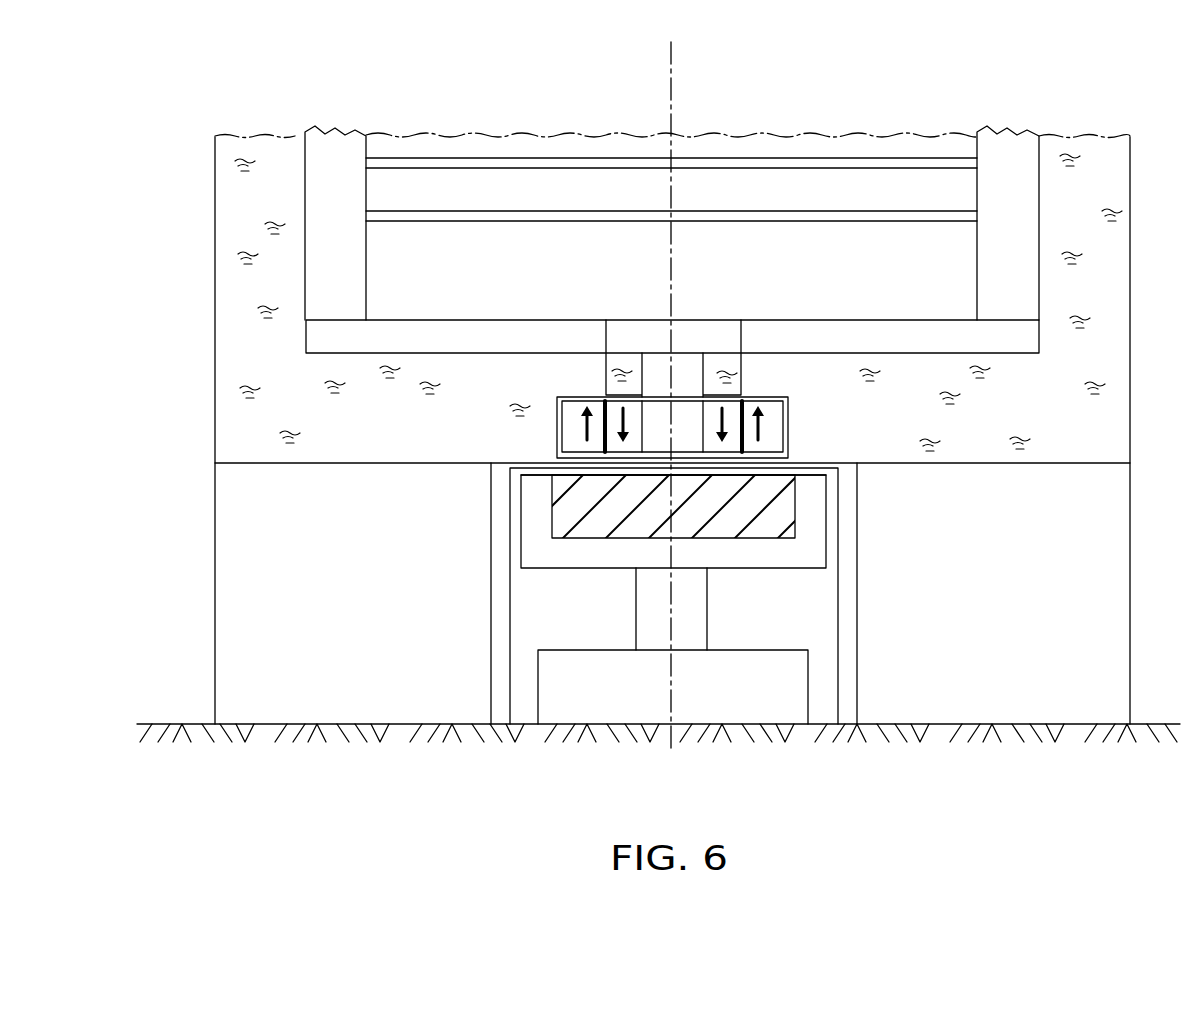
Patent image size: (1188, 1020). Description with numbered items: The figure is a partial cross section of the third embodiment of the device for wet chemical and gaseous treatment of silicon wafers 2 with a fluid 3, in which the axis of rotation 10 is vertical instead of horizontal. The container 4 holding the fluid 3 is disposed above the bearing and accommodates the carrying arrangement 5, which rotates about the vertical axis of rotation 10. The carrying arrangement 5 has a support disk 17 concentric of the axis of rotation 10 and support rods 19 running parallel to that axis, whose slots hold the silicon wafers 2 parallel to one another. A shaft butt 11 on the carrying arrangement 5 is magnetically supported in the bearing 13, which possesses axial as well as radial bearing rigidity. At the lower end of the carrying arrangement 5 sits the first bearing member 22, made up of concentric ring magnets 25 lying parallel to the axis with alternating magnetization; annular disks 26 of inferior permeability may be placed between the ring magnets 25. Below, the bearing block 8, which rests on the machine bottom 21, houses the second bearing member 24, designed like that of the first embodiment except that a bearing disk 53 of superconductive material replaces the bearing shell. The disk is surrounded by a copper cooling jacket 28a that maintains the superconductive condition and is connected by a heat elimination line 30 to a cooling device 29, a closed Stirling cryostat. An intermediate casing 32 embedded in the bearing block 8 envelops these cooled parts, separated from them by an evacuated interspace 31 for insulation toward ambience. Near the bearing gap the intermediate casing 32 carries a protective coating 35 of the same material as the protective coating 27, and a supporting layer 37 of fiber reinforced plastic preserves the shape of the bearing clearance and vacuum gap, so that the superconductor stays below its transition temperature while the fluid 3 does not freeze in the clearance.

The axis of rotation 10 is at (675, 57).
The support rods 19 is at (1009, 176).
The silicon wafers 2 is at (584, 213).
The container 4 is at (215, 222).
The carrying arrangement 5 is at (305, 275).
The support disk 17 is at (466, 336).
The shaft butt 11 is at (690, 372).
The protective coating 27 is at (567, 400).
The annular disks 26 is at (608, 402).
The ring magnets 25 is at (768, 410).
The first bearing member 22 is at (557, 430).
The supporting layer 37 is at (787, 476).
The protective coating 35 is at (822, 468).
The fluid 3 is at (1047, 423).
The bearing 13 is at (522, 510).
The cooling jacket 28a is at (547, 551).
The bearing disk 53 is at (780, 512).
The bearing block 8 is at (215, 579).
The second bearing member 24 is at (485, 605).
The heat elimination line 30 is at (657, 609).
The intermediate casing 32 is at (847, 595).
The interspace 31 is at (823, 675).
The cooling device 29 is at (614, 690).
The machine bottom 21 is at (948, 745).